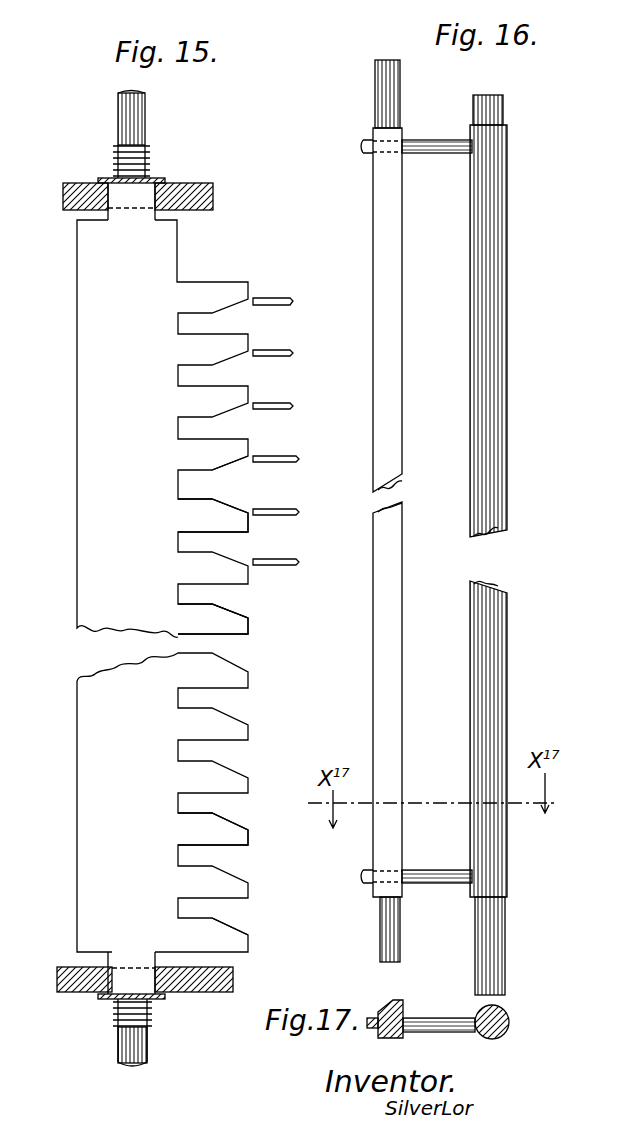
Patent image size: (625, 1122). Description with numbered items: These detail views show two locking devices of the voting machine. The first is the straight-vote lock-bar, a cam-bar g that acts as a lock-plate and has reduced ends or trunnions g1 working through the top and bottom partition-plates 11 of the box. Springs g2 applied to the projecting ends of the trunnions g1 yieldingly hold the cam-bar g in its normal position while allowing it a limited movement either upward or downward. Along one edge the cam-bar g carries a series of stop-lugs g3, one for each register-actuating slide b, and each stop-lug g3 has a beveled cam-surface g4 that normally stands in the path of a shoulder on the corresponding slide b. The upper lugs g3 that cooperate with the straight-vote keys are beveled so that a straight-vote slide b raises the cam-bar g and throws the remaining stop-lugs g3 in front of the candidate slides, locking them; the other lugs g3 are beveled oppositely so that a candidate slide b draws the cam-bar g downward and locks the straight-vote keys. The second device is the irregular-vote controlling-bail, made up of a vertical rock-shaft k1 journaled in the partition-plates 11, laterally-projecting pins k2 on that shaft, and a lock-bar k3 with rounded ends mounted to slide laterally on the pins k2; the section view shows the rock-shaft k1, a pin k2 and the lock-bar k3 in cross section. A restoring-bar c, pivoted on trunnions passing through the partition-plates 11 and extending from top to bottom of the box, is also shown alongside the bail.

In FIG. 15, the cam-bar g is at (162, 586).
In FIG. 15, the trunnions g1 is at (143, 197).
In FIG. 15, the springs g2 is at (147, 157).
In FIG. 15, the stop-lugs g3 is at (250, 627).
In FIG. 15, the cam-surface g4 is at (232, 460).
In FIG. 15, the register-actuating slides b is at (292, 353).
In FIG. 15, the partition-plates 11 is at (213, 193).
In FIG. 16, the rock-shaft k1 is at (492, 382).
In FIG. 17, the rock-shaft k1 is at (497, 1032).
In FIG. 16, the pins k2 is at (439, 157).
In FIG. 17, the pins k2 is at (432, 1018).
In FIG. 16, the lock-bar k3 is at (390, 362).
In FIG. 17, the lock-bar k3 is at (387, 1008).
In FIG. 16, the restoring-bar c is at (495, 940).